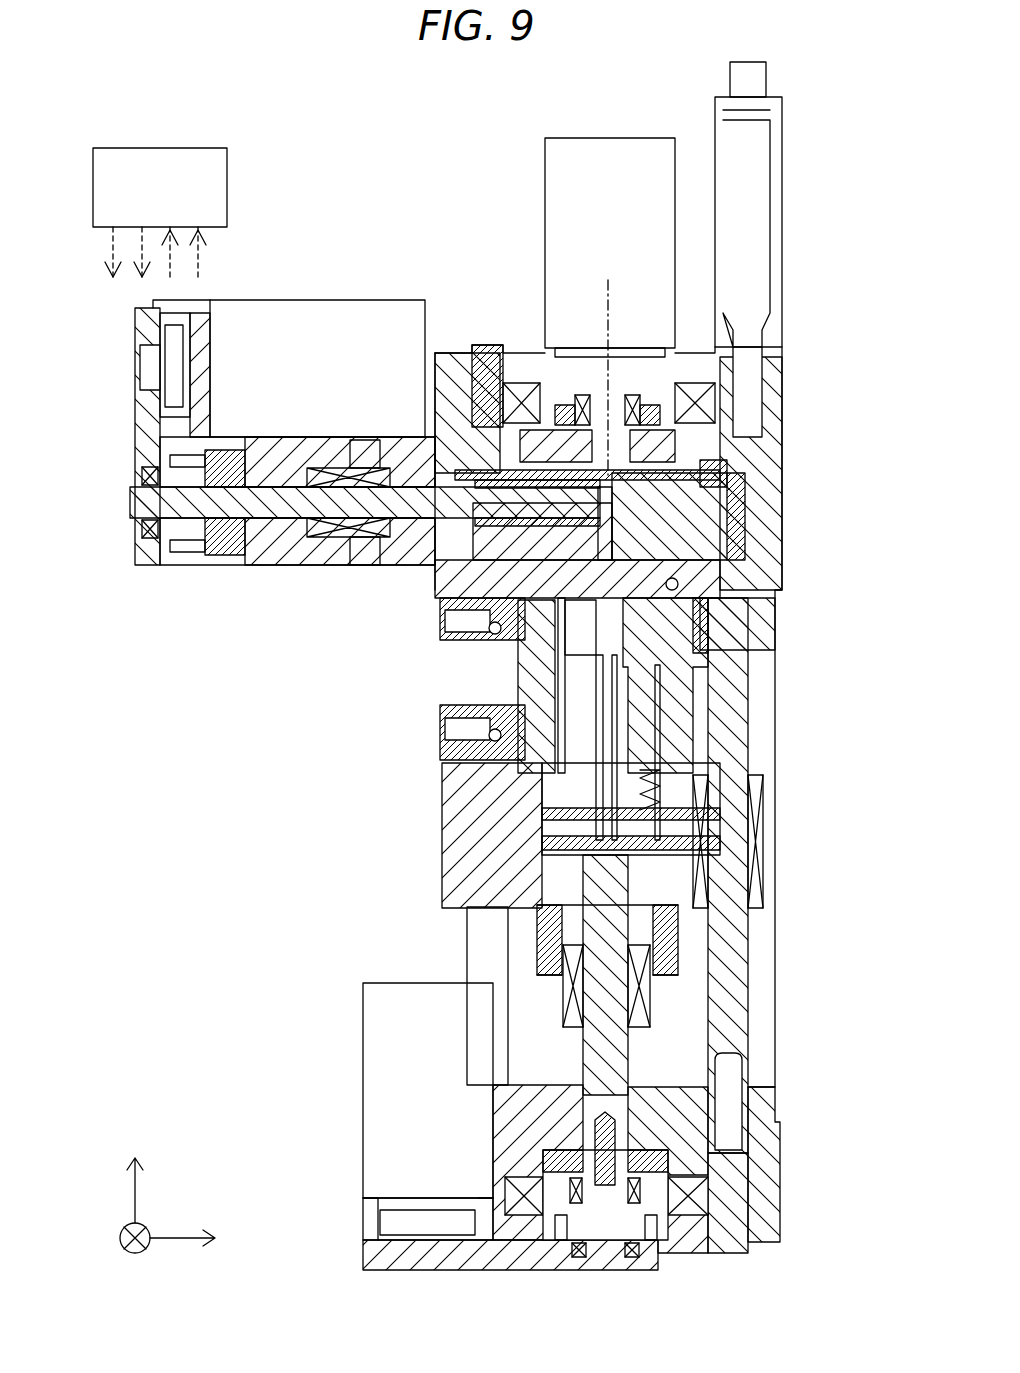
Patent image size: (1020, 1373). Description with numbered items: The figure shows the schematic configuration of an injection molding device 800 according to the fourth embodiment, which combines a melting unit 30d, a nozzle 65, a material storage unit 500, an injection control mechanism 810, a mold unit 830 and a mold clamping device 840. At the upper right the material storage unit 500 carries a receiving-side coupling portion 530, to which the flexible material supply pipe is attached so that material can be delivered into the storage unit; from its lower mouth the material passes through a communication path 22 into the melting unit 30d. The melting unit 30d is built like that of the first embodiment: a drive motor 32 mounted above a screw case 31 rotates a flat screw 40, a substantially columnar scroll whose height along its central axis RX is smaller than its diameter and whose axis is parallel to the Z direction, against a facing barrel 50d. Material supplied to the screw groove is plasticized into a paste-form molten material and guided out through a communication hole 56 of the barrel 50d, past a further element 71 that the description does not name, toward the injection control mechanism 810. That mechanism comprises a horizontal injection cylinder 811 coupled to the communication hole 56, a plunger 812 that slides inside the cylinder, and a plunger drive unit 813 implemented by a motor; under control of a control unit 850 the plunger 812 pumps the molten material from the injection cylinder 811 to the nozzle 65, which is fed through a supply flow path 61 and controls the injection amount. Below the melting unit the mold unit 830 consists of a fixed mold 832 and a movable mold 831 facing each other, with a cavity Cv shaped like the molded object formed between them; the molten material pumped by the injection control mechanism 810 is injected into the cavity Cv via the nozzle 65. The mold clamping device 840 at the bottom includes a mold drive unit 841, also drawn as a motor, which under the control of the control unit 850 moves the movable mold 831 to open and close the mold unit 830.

The material storage unit 500 is at (702, 106).
The receiving-side coupling portion 530 is at (752, 103).
The drive motor 32 is at (545, 175).
The melting unit 30d is at (482, 254).
The central axis RX is at (600, 320).
The flat screw 40 is at (518, 355).
The plunger drive unit 813 is at (313, 300).
The control unit 850 is at (227, 182).
The communication path 22 is at (782, 385).
The screw case 31 is at (765, 438).
The ring 71 is at (745, 487).
The barrel 50d is at (690, 505).
The communication hole 56 is at (740, 543).
The supply flow path 61 is at (708, 612).
The nozzle 65 is at (690, 640).
The cavity Cv is at (640, 668).
The plunger 812 is at (275, 540).
The injection cylinder 811 is at (418, 548).
The fixed mold 832 is at (480, 640).
The movable mold 831 is at (510, 690).
The injection control mechanism 810 is at (285, 670).
The mold unit 830 is at (368, 736).
The injection molding device 800 is at (330, 830).
The mold clamping device 840 is at (408, 958).
The mold drive unit 841 is at (365, 1083).